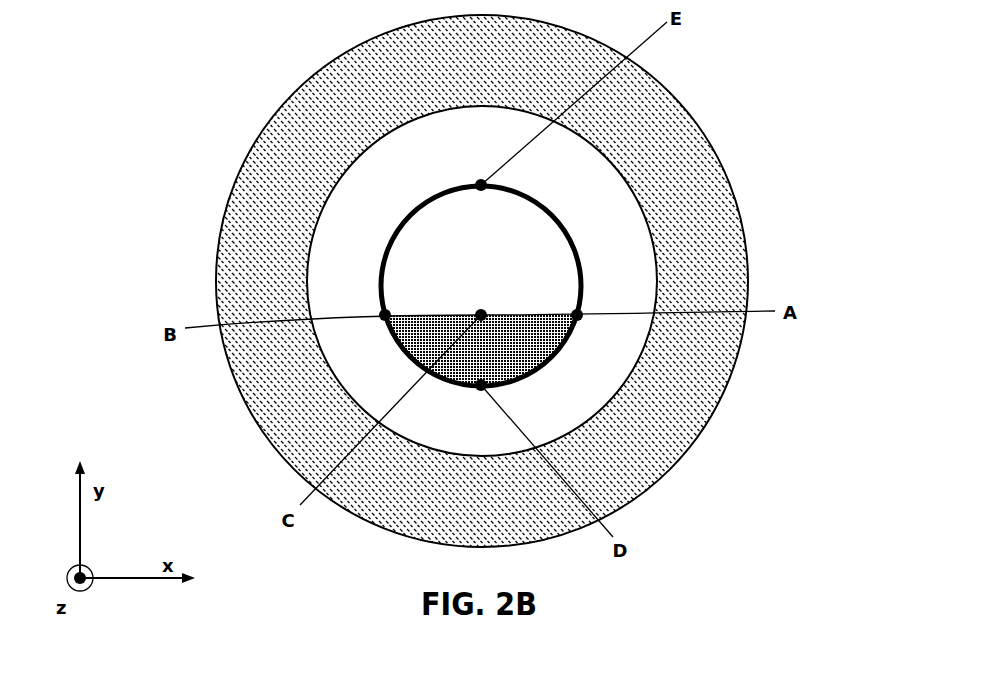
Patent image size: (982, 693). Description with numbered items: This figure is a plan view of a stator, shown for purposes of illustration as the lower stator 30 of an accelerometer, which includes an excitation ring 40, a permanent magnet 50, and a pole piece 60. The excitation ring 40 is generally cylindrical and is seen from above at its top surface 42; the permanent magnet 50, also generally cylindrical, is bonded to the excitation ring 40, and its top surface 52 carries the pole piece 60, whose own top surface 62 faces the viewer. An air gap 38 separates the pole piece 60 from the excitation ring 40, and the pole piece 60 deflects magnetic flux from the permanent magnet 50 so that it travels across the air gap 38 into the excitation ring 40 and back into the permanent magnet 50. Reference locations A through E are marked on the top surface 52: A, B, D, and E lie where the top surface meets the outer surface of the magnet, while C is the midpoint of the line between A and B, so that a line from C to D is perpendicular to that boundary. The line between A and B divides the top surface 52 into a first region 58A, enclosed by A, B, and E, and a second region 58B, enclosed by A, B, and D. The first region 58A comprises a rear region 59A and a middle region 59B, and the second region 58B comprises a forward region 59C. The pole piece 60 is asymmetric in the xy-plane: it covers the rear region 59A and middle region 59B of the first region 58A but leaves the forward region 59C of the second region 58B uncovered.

The lower stator 30 is at (128, 94).
The air gap 38 is at (415, 155).
The excitation ring 40 is at (466, 518).
The top surface 42 is at (670, 450).
The permanent magnet 50 is at (488, 354).
The top surface 52 is at (533, 350).
The first region 58A is at (382, 190).
The second region 58B is at (382, 317).
The rear region 59A is at (582, 193).
The middle region 59B is at (582, 266).
The forward region 59C is at (582, 318).
The pole piece 60 is at (460, 261).
The top surface 62 is at (505, 220).